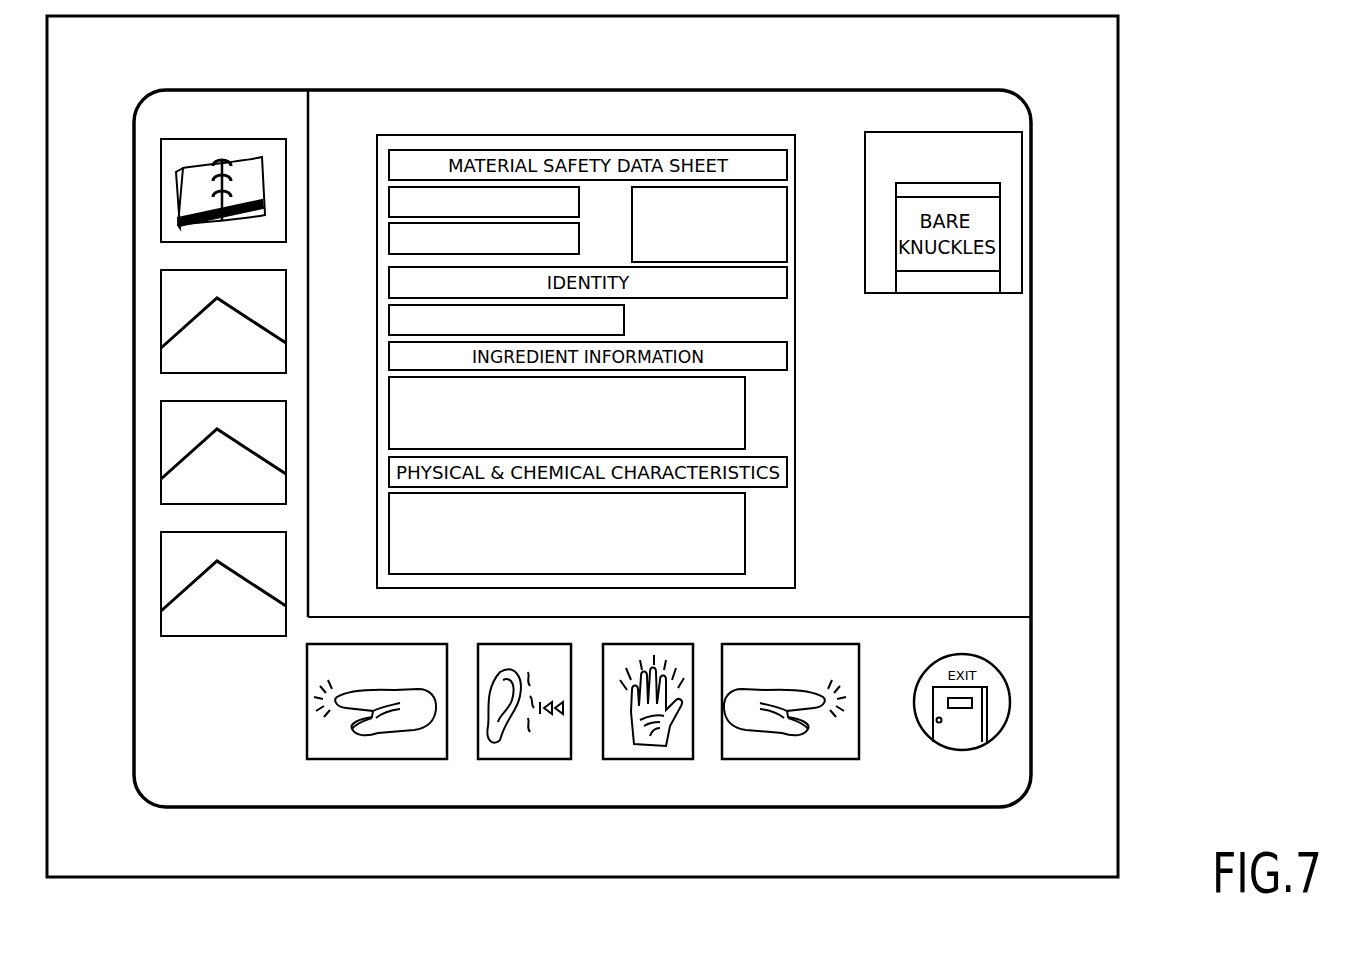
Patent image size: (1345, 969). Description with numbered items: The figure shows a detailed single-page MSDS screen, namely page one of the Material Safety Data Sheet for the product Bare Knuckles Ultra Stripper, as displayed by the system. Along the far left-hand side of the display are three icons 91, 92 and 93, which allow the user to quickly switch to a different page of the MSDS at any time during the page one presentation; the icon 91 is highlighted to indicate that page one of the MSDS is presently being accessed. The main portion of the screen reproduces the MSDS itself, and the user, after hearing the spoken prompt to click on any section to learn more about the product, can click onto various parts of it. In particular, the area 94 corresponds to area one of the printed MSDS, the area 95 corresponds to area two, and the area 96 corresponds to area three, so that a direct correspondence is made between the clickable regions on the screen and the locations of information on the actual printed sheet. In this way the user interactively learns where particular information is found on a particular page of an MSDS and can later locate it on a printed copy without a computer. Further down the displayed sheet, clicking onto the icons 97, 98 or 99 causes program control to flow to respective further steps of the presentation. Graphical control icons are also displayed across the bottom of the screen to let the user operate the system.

The icon 91 is at (163, 310).
The icon 92 is at (163, 442).
The icon 93 is at (163, 569).
The area 94 is at (389, 203).
The area 95 is at (389, 239).
The area 96 is at (787, 237).
The icon 97 is at (389, 307).
The icon 98 is at (389, 411).
The icon 99 is at (389, 543).